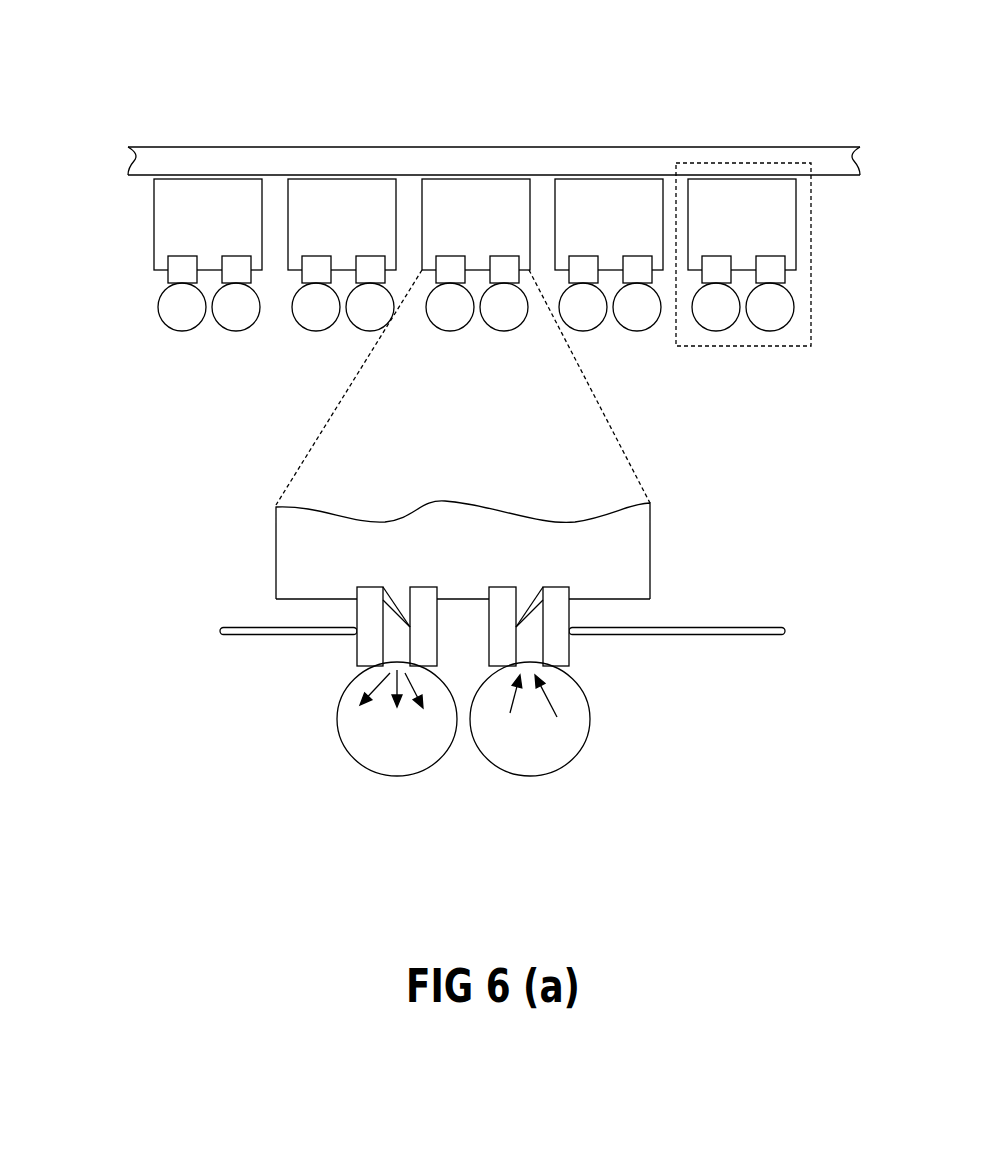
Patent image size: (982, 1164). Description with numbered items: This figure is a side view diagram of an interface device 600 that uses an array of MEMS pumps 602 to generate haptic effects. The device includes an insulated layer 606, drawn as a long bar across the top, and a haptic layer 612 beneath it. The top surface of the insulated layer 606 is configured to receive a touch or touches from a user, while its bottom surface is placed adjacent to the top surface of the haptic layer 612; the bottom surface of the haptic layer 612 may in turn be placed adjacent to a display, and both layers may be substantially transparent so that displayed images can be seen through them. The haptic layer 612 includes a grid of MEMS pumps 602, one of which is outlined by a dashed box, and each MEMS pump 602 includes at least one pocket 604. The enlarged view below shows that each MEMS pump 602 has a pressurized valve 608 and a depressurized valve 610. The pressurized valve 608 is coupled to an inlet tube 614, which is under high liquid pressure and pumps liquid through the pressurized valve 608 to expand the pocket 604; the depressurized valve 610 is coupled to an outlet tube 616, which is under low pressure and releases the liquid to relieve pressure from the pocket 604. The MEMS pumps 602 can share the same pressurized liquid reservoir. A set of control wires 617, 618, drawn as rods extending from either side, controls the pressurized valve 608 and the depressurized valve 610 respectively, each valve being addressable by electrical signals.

The interface device 600 is at (190, 50).
The MEMS pump 602 is at (785, 347).
The pocket 604 is at (726, 229).
The insulated layer 606 is at (455, 158).
The pressurized valve 608 is at (569, 653).
The depressurized valve 610 is at (357, 653).
The haptic layer 612 is at (140, 185).
The inlet tube 614 is at (558, 770).
The outlet tube 616 is at (373, 768).
The control wire 617 is at (730, 625).
The control wire 618 is at (300, 635).